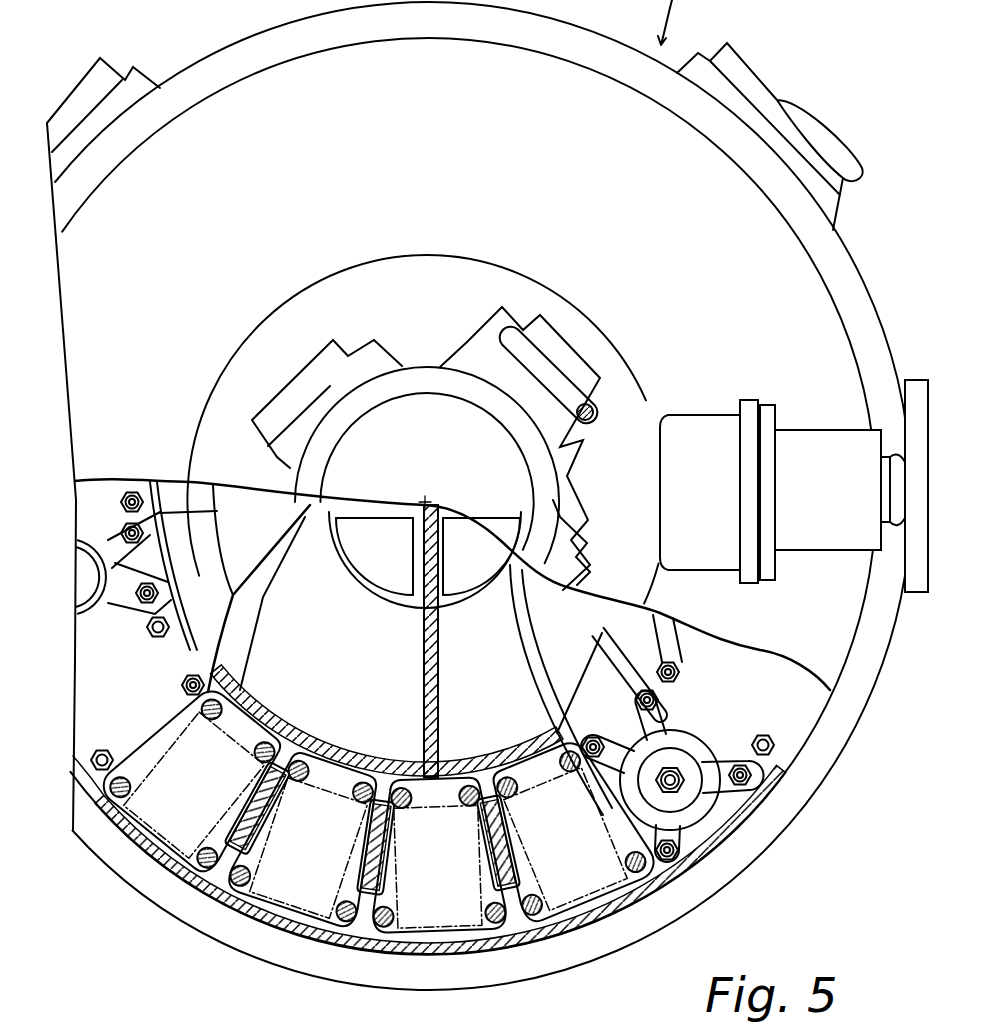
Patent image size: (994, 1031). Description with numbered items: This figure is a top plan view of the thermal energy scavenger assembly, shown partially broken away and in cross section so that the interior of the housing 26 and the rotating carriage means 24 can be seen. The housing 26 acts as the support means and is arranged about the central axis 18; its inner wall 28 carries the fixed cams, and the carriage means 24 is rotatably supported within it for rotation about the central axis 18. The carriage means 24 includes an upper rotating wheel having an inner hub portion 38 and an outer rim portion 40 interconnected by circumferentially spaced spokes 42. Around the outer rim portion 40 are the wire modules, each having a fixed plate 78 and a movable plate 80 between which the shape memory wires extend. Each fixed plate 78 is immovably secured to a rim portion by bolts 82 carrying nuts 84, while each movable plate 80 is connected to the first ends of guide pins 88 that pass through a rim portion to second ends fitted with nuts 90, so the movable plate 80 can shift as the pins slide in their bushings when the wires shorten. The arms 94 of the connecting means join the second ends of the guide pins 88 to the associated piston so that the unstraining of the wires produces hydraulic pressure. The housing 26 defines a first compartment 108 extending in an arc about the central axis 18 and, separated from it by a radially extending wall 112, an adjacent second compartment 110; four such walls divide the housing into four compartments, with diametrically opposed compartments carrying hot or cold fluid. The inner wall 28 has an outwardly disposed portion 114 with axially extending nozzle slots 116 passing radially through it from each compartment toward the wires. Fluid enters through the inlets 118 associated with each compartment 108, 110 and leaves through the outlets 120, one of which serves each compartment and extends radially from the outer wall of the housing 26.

The central axis 18 is at (427, 500).
The carriage means 24 is at (516, 936).
The housing 26 is at (375, 997).
The inner wall 28 is at (372, 590).
The inner hub portion 38 is at (530, 680).
The outer rim portion 40 is at (792, 660).
The spokes 42 is at (610, 642).
The fixed plate 78 is at (347, 778).
The movable plate 80 is at (257, 740).
The bolts 82 is at (303, 770).
The nuts 84 is at (156, 632).
The guide pins 88 is at (151, 588).
The nuts 90 is at (760, 782).
The arms 94 is at (100, 540).
The first compartment 108 is at (372, 647).
The second compartment 110 is at (504, 643).
The wall 112 is at (422, 650).
The outwardly disposed portion 114 is at (300, 713).
The nozzle slots 116 is at (250, 678).
The inlets 118 is at (343, 352).
The outlets 120 is at (100, 70).